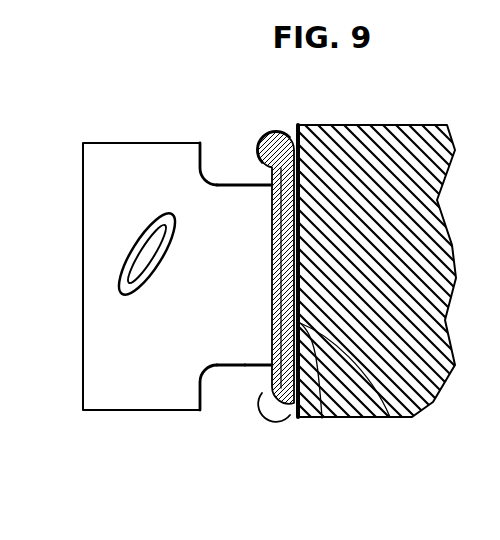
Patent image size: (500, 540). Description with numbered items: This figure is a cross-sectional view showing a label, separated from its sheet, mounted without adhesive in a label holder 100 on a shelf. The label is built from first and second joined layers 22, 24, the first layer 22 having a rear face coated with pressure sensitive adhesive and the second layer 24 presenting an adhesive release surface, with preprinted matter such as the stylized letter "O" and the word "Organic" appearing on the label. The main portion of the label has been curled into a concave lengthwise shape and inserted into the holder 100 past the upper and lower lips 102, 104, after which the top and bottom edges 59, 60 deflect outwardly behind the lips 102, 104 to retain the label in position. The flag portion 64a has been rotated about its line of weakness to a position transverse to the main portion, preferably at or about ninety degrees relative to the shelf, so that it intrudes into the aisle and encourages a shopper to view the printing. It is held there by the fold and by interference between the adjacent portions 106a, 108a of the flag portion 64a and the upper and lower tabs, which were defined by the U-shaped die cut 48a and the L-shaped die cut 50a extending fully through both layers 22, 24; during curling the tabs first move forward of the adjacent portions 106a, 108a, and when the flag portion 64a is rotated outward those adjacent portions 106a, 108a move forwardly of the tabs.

The first layer 22 is at (322, 418).
The second layer 24 is at (390, 417).
The die cut 48a is at (201, 392).
The die cut 50a is at (201, 156).
The top edge 59 is at (257, 167).
The bottom edge 60 is at (259, 378).
The flag portion 64a is at (83, 272).
The label holder 100 is at (264, 302).
The upper lip 102 is at (283, 133).
The lower lip 104 is at (273, 418).
The adjacent portion 106a is at (199, 156).
The adjacent portion 108a is at (201, 389).